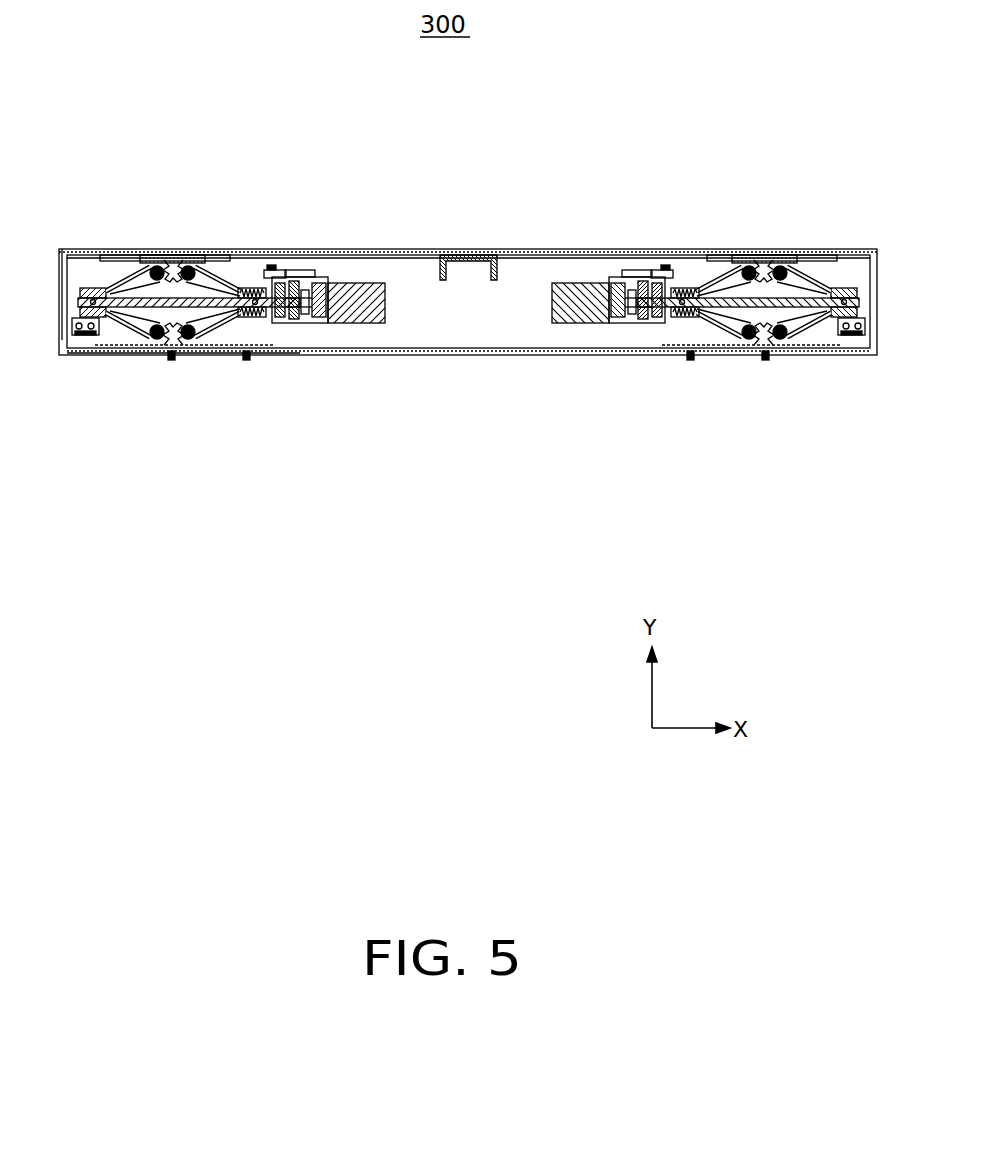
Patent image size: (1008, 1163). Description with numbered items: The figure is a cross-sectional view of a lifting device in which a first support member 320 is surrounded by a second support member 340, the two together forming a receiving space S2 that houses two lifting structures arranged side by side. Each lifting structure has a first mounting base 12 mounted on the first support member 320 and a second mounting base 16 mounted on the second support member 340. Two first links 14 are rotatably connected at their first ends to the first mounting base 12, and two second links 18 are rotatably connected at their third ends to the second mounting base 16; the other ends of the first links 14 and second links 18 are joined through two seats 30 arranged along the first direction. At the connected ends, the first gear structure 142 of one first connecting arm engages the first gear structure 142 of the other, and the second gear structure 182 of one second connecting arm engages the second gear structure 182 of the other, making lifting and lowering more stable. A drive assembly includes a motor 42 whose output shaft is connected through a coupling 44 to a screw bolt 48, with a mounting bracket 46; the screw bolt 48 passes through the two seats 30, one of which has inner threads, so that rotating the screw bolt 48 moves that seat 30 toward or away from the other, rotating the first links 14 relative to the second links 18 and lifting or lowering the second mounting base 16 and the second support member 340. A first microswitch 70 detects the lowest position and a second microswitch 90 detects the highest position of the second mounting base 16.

The first mounting base 12 is at (283, 350).
The first link 14 is at (120, 318).
The first gear structure 142 is at (152, 335).
The second mounting base 16 is at (143, 257).
The second link 18 is at (105, 262).
The second gear structure 182 is at (167, 258).
The seat 30 is at (78, 295).
The first support member 320 is at (70, 357).
The second support member 340 is at (62, 322).
The motor 42 is at (345, 310).
The coupling 44 is at (300, 323).
The mounting bracket 46 is at (297, 268).
The screw bolt 48 is at (250, 318).
The first microswitch 70 is at (92, 335).
The second microswitch 90 is at (273, 268).
The receiving space S2 is at (481, 338).